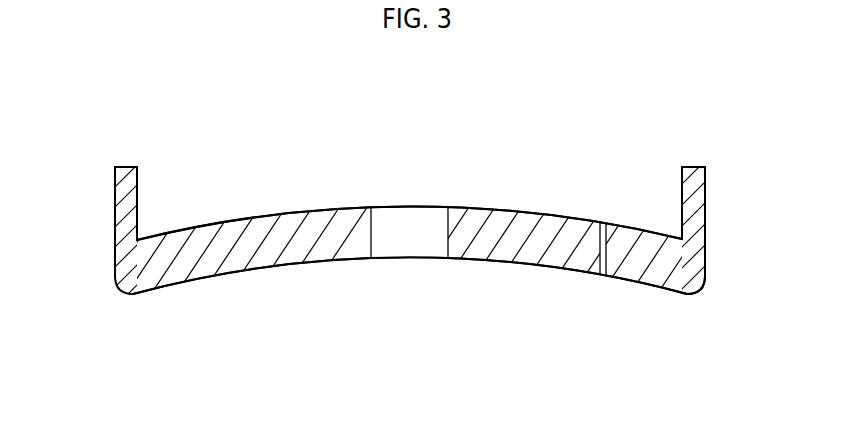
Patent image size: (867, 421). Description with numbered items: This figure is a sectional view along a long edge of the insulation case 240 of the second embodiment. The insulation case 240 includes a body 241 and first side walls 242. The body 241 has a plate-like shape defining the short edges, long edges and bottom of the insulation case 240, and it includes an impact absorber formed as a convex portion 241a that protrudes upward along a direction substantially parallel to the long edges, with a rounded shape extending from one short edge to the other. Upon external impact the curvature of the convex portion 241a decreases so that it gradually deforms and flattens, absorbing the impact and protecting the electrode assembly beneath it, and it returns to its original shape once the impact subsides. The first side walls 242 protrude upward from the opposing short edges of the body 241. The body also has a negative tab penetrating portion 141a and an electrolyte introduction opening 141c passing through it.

The insulation case 240 is at (425, 221).
The body 241 is at (514, 281).
The convex portion 241a is at (278, 217).
The first side walls 242 is at (703, 187).
The negative tab penetrating portion 141a is at (409, 213).
The electrolyte introduction opening 141c is at (603, 227).